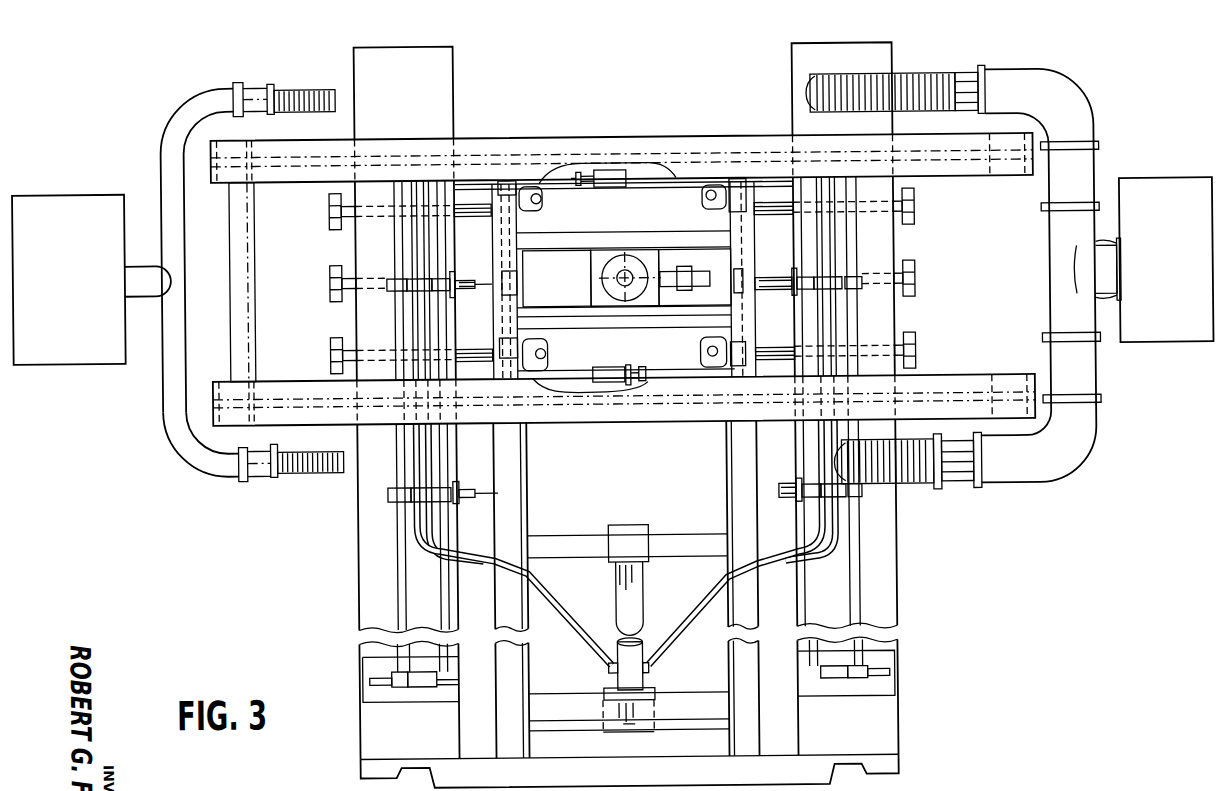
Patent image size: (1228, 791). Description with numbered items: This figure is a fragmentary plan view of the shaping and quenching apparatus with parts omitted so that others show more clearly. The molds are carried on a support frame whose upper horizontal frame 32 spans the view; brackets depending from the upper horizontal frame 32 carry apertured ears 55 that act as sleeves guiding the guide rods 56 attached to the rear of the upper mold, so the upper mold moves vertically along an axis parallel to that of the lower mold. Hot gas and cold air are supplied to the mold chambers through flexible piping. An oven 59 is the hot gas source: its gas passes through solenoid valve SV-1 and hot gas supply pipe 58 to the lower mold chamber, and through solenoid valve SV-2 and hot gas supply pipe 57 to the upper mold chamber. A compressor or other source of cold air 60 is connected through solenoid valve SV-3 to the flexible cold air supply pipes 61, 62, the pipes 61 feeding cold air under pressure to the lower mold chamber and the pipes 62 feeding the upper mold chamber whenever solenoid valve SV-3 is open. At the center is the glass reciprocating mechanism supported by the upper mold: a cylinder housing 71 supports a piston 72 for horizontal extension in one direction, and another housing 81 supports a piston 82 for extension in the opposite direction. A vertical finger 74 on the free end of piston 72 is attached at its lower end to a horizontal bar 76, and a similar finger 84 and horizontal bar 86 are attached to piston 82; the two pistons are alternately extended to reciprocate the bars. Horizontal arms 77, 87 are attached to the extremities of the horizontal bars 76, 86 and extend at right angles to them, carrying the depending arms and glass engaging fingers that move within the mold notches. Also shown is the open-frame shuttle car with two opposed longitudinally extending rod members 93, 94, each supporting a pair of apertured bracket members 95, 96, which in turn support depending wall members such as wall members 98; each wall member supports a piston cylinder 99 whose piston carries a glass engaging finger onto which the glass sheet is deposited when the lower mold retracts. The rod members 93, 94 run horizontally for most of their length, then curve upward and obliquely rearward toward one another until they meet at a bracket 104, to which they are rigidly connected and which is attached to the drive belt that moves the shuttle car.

The upper horizontal frame 32 is at (269, 174).
The apertured ears 55 is at (537, 204).
The guide rods 56 is at (545, 197).
The hot gas supply pipe 57 is at (310, 88).
The hot gas supply pipe 58 is at (314, 470).
The oven 59 is at (78, 289).
The source of cold air 60 is at (1186, 284).
The cold air supply pipes 61 is at (914, 476).
The cold air supply pipes 62 is at (912, 74).
The cylinder housing 71 is at (613, 367).
The piston 72 is at (632, 367).
The vertical finger 74 is at (647, 367).
The horizontal bar 76 is at (653, 378).
The horizontal arm 77 is at (498, 248).
The housing 81 is at (622, 182).
The piston 82 is at (592, 178).
The finger 84 is at (580, 187).
The horizontal bar 86 is at (666, 178).
The horizontal arm 87 is at (738, 251).
The rod member 93 is at (424, 444).
The rod member 94 is at (824, 436).
The apertured bracket members 95 is at (432, 280).
The apertured bracket members 96 is at (832, 278).
The wall members 98 is at (859, 278).
The piston cylinder 99 is at (447, 297).
The bracket 104 is at (646, 669).
The solenoid valve SV-1 is at (257, 478).
The solenoid valve SV-2 is at (257, 79).
The solenoid valve SV-3 is at (1097, 272).